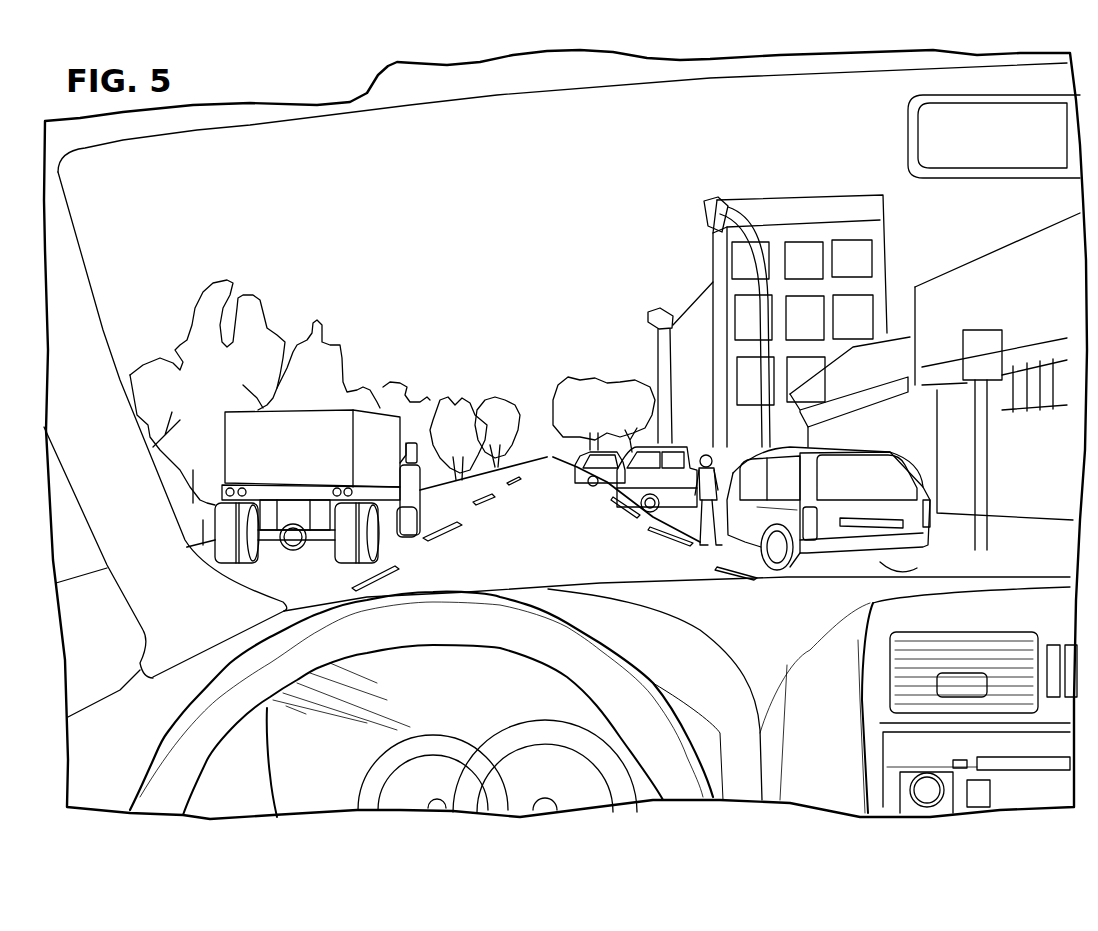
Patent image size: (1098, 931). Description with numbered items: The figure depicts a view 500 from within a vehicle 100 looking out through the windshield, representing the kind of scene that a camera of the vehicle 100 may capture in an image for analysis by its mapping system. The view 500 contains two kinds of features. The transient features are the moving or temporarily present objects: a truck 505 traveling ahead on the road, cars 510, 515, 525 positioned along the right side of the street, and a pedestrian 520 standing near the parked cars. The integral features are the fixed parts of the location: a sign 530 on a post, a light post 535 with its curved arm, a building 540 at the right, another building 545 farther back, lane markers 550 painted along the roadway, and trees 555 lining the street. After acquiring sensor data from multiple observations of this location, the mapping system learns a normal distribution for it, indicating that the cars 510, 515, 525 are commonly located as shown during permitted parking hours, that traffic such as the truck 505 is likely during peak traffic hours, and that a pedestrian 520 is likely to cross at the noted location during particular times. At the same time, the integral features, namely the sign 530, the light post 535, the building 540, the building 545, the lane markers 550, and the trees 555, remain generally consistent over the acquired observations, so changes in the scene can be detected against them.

The vehicle 100 is at (823, 748).
The view 500 is at (358, 94).
The truck 505 is at (387, 408).
The car 510 is at (573, 463).
The car 515 is at (608, 483).
The pedestrian 520 is at (706, 455).
The car 525 is at (810, 443).
The sign 530 is at (983, 328).
The light post 535 is at (727, 207).
The building 540 is at (930, 277).
The building 545 is at (668, 310).
The lane markers 550 is at (460, 524).
The trees 555 is at (585, 377).